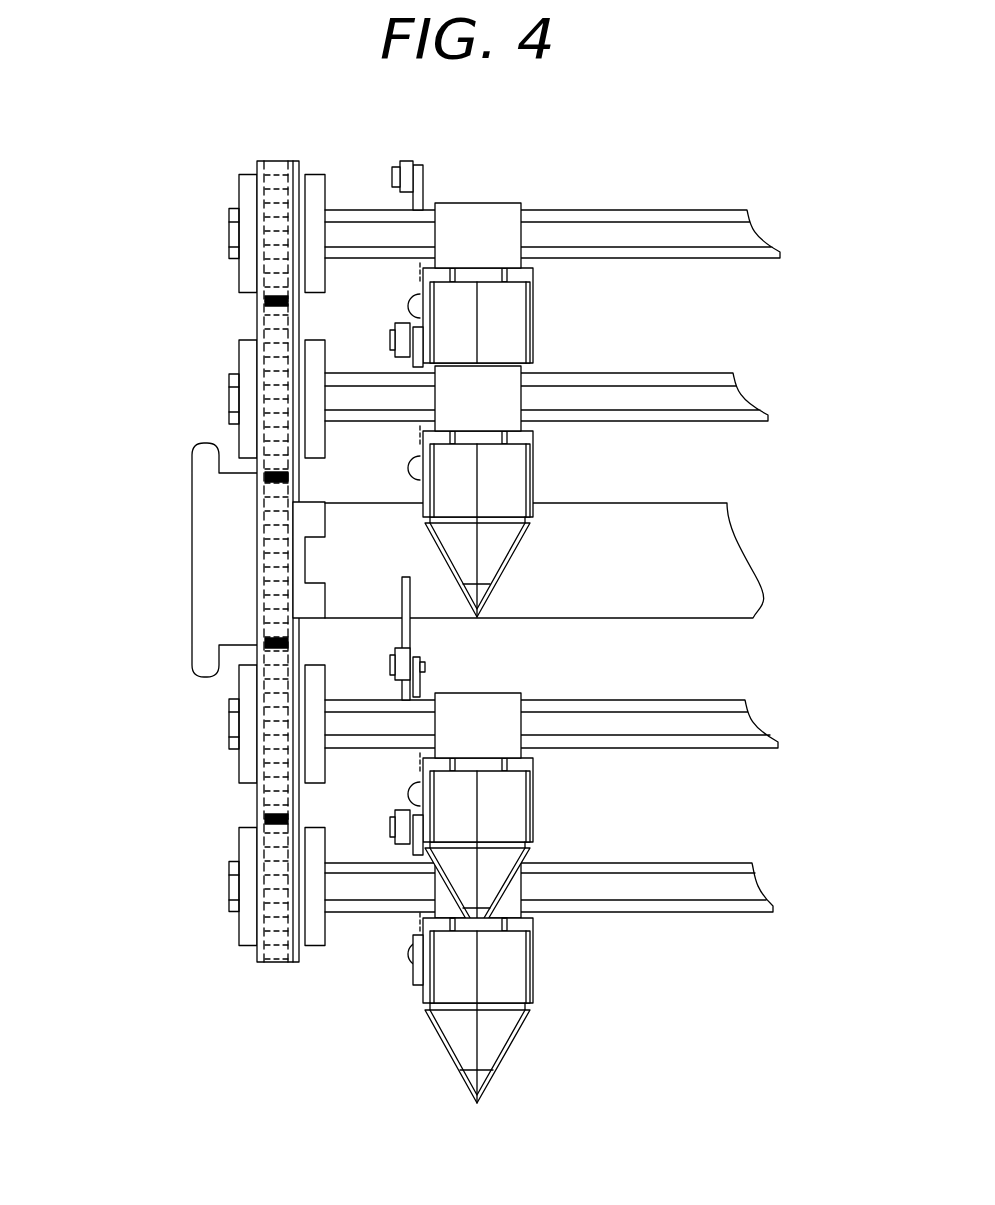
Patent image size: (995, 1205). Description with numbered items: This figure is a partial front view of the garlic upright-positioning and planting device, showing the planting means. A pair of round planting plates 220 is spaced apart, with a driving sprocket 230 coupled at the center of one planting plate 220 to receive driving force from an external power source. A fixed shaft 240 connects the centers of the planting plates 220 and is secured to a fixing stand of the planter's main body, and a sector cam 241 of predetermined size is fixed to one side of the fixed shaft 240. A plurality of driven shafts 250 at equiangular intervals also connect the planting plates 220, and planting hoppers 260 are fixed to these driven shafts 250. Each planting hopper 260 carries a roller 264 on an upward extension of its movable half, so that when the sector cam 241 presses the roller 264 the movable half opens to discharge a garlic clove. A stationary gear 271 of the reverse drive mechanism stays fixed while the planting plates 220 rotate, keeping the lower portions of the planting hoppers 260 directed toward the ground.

The planting plate 220 is at (257, 318).
The driving sprocket 230 is at (197, 647).
The fixed shaft 240 is at (723, 560).
The sector cam 241 is at (407, 587).
The driven shaft 250 is at (715, 890).
The planting hopper 260 is at (532, 307).
The roller 264 is at (423, 172).
The stationary gear 271 is at (305, 597).